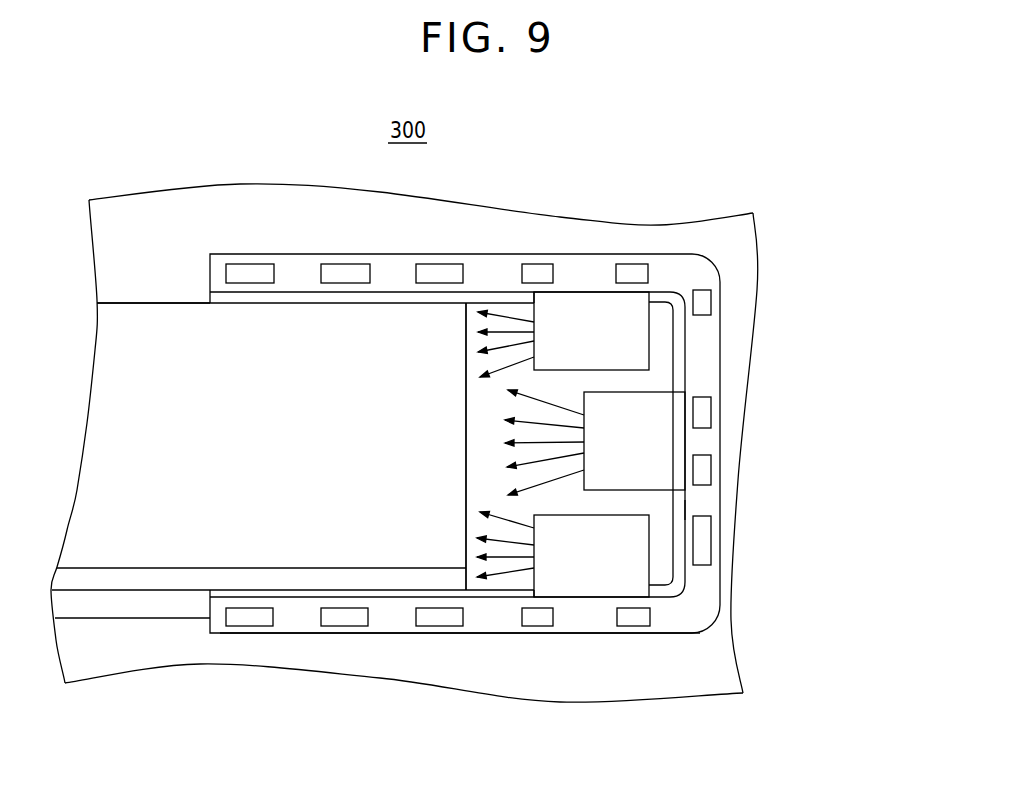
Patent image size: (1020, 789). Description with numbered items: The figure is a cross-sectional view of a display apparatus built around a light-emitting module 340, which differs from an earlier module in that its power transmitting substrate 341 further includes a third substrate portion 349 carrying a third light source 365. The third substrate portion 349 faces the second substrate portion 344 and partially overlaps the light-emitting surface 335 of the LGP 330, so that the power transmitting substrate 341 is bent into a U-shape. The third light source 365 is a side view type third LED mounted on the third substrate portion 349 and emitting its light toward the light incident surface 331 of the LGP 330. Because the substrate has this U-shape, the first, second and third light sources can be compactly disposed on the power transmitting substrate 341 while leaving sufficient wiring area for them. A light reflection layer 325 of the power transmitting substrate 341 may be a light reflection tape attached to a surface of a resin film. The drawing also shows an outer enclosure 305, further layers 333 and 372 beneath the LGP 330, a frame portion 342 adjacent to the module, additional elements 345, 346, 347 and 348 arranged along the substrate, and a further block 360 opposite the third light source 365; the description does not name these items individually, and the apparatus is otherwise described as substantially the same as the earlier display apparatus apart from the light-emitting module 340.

The outer case 305 is at (308, 660).
The light reflection layer 325 is at (242, 297).
The LGP 330 is at (315, 320).
The light incident surface 331 is at (466, 303).
The lower layer 333 is at (98, 568).
The light-emitting surface 335 is at (190, 303).
The light-emitting module 340 is at (779, 427).
The power transmitting substrate 341 is at (725, 533).
The inner frame portion 342 is at (742, 508).
The second substrate portion 344 is at (385, 632).
The second sensor pad 345 is at (707, 470).
The first sensor pad 346 is at (703, 413).
The lower light emitting diode 347 is at (540, 623).
The lower end light emitting diode 348 is at (627, 623).
The third substrate portion 349 is at (393, 273).
The lower light source block 360 is at (640, 568).
The third light source 365 is at (640, 333).
The bottom layer 372 is at (155, 600).